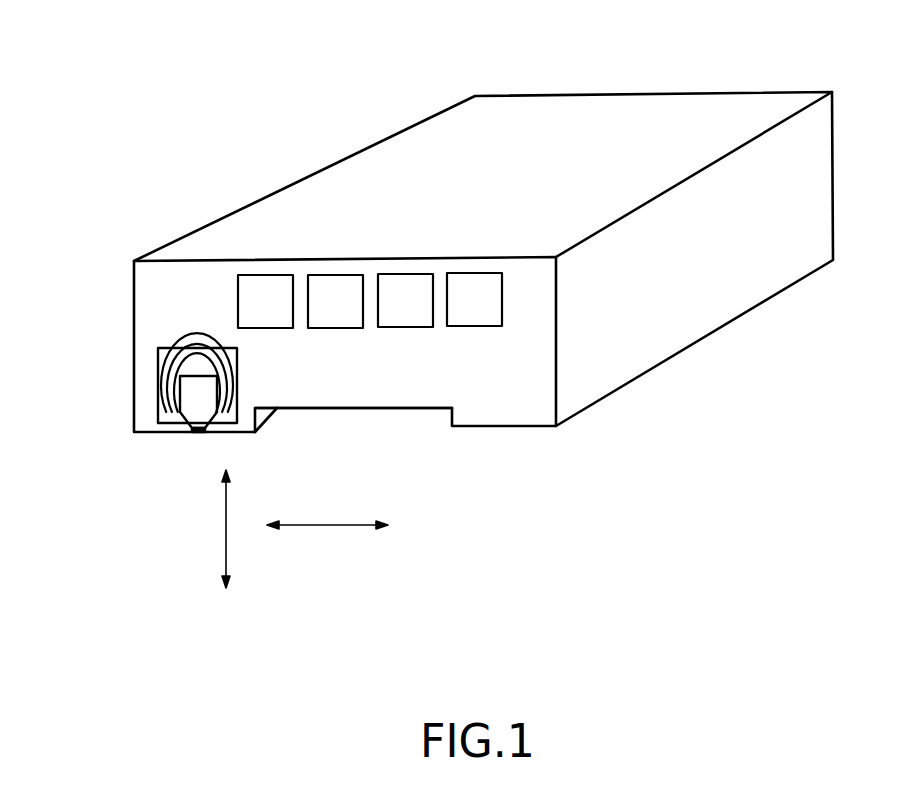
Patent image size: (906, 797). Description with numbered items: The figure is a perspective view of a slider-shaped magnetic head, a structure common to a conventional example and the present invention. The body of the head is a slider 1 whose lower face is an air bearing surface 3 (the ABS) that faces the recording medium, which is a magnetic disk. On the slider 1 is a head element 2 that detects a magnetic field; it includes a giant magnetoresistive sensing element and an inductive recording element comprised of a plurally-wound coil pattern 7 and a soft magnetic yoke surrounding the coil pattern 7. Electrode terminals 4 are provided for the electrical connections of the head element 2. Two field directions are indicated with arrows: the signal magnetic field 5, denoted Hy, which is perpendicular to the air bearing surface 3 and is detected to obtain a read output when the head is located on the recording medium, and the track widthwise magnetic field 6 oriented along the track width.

The slider 1 is at (457, 130).
The head element 2 is at (193, 402).
The air bearing surface 3 is at (508, 427).
The electrode terminal 4 is at (481, 303).
The signal magnetic field 5 is at (225, 527).
The track widthwise magnetic field 6 is at (320, 525).
The coil pattern 7 is at (182, 335).